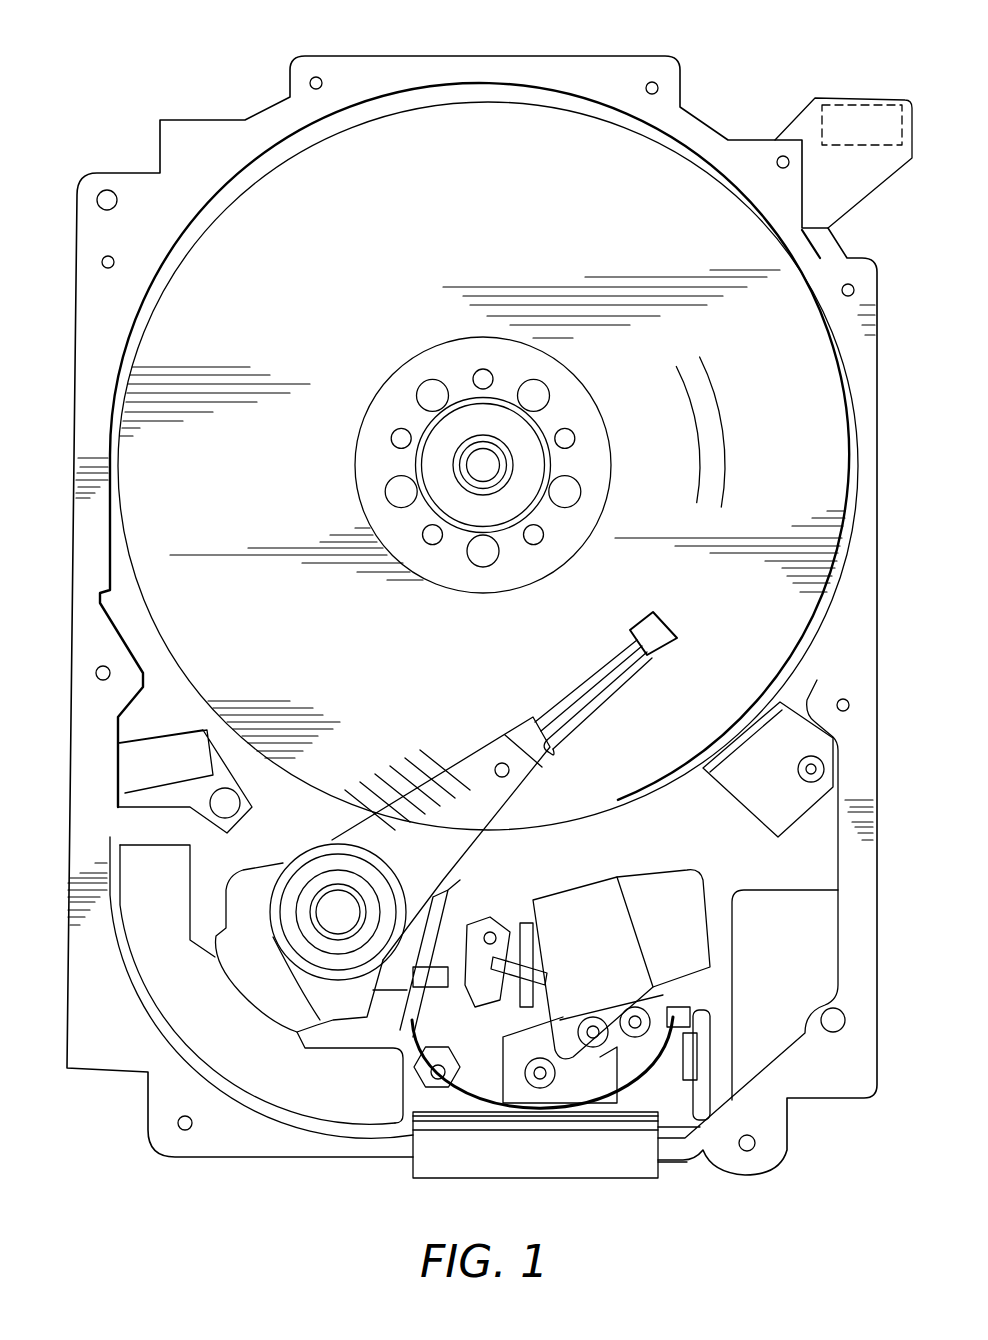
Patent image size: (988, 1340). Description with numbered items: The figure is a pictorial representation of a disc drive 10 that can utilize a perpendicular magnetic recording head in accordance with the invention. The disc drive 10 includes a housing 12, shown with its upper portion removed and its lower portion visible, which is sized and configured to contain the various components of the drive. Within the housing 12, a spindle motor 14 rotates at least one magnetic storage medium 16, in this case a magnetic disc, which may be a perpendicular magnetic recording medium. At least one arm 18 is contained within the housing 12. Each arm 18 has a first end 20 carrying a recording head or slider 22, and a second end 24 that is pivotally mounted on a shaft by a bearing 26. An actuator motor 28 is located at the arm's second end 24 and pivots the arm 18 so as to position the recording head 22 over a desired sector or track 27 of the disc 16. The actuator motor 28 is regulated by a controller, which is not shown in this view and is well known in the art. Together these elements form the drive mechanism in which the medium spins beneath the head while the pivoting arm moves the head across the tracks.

The disc drive 10 is at (130, 100).
The housing 12 is at (632, 70).
The spindle motor 14 is at (477, 470).
The magnetic storage medium 16 is at (393, 243).
The arm 18 is at (463, 785).
The first end 20 is at (593, 662).
The recording head 22 is at (661, 627).
The second end 24 is at (366, 848).
The bearing 26 is at (330, 905).
The track 27 is at (712, 440).
The actuator motor 28 is at (223, 1041).